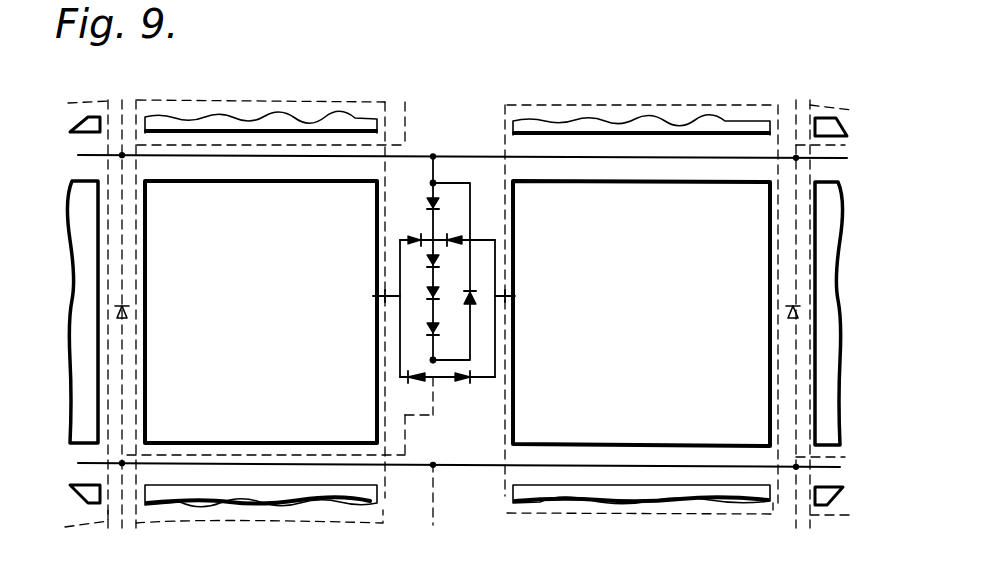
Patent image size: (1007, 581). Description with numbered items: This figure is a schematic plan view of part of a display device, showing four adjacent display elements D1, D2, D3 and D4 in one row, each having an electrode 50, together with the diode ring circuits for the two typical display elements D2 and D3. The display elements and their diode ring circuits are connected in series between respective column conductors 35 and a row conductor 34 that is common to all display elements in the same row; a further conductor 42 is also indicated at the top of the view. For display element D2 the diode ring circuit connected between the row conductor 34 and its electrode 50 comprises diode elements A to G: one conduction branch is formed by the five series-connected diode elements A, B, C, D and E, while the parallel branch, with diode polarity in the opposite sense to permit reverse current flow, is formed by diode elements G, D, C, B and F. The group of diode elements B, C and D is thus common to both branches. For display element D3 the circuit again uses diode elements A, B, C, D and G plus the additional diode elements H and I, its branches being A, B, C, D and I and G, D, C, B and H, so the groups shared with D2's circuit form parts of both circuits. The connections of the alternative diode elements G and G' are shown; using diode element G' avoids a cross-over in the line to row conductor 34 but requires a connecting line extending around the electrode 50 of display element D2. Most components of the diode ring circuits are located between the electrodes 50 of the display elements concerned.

The data line 42 is at (368, 0).
The row conductor 34 is at (828, 160).
The column conductors 35 is at (508, 118).
The electrode 50 is at (386, 195).
The display element D1 is at (64, 303).
The display element D2 is at (272, 315).
The display element D3 is at (658, 315).
The display element D4 is at (850, 308).
The diode element G' is at (457, 316).
The diode element A is at (424, 204).
The diode element B is at (424, 262).
The diode element C is at (424, 294).
The diode element D is at (424, 329).
The diode element E is at (423, 353).
The diode element F is at (408, 229).
The diode element G is at (477, 287).
The diode element H is at (457, 229).
The diode element I is at (439, 390).